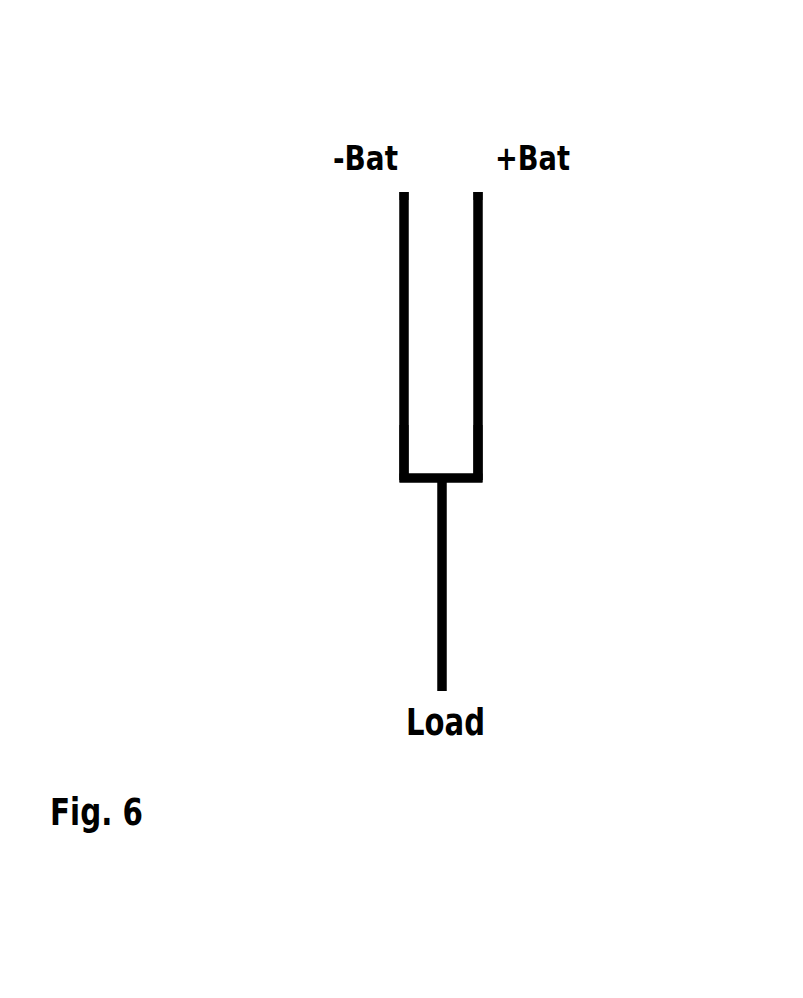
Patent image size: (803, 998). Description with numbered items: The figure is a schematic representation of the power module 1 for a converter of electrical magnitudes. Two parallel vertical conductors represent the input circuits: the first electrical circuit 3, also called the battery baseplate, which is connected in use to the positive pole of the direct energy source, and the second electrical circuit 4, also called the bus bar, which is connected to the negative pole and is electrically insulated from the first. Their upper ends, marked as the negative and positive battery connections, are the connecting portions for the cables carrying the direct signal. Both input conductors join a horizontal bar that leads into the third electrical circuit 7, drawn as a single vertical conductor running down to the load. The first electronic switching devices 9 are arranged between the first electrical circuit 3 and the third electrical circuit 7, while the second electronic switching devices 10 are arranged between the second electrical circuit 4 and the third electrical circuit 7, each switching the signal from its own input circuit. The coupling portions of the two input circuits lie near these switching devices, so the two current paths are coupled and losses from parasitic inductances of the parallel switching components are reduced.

The power module 1 is at (108, 262).
The first electrical circuit 3 is at (485, 268).
The second electrical circuit 4 is at (399, 260).
The third electrical circuit 7 is at (448, 633).
The first electronic switching devices 9 is at (477, 495).
The second electronic switching devices 10 is at (397, 488).